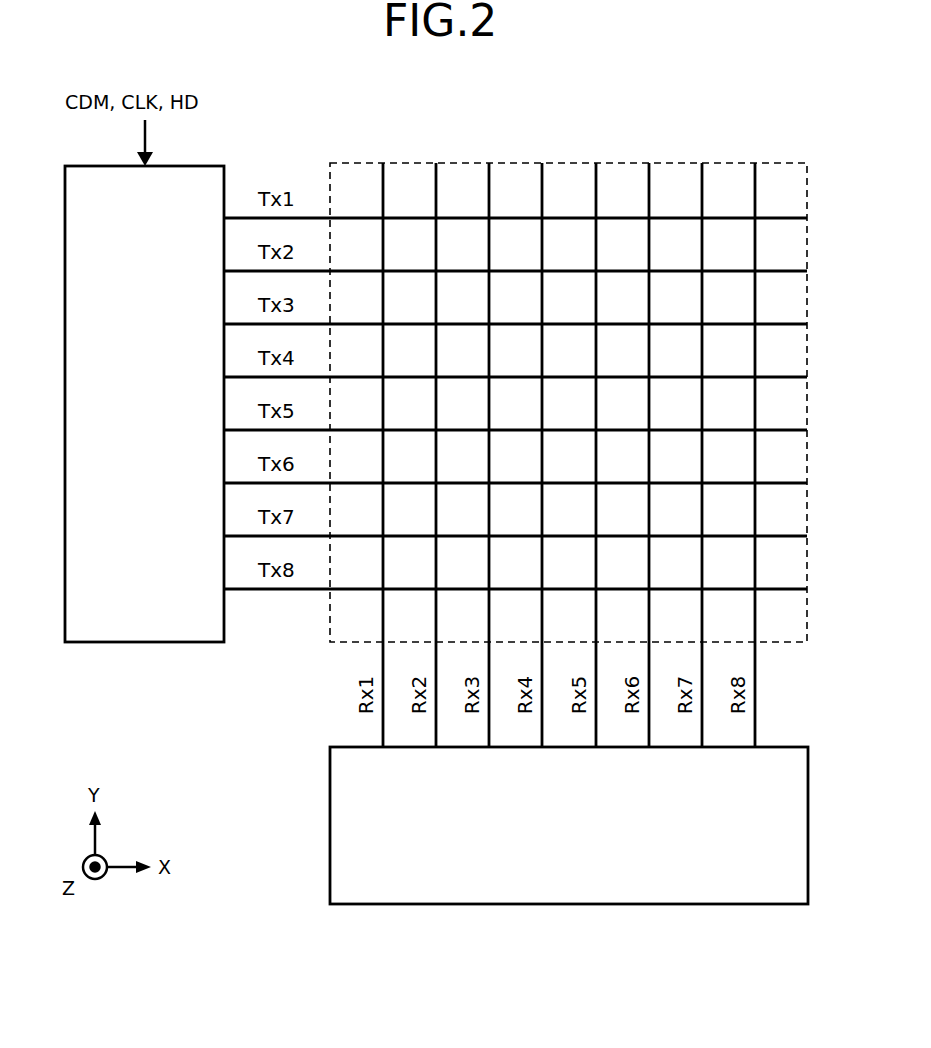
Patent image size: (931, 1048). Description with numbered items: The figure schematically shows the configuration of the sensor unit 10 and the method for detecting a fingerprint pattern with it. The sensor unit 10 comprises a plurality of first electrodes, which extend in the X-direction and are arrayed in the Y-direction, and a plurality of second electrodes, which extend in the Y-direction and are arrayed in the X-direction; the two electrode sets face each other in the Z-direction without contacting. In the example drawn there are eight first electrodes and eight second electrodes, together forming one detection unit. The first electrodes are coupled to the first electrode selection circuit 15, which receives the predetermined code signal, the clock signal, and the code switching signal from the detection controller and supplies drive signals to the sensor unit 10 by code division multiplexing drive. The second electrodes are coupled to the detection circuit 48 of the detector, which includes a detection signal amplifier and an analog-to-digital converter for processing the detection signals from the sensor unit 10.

The sensor unit 10 is at (567, 163).
The first electrode selection circuit 15 is at (148, 642).
The detection circuit 48 is at (573, 904).